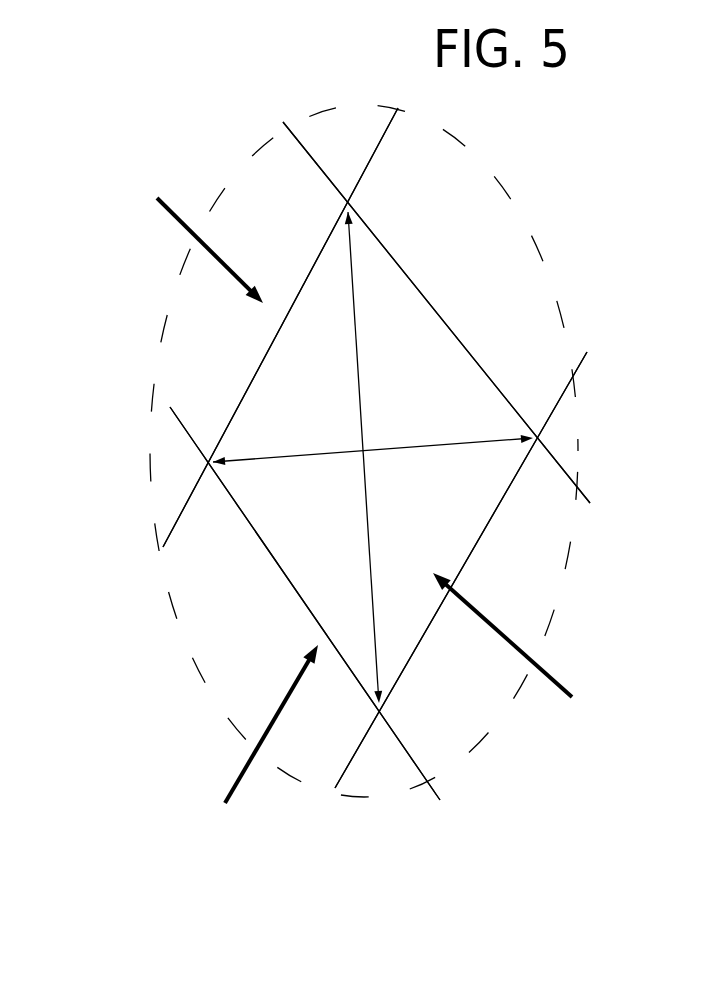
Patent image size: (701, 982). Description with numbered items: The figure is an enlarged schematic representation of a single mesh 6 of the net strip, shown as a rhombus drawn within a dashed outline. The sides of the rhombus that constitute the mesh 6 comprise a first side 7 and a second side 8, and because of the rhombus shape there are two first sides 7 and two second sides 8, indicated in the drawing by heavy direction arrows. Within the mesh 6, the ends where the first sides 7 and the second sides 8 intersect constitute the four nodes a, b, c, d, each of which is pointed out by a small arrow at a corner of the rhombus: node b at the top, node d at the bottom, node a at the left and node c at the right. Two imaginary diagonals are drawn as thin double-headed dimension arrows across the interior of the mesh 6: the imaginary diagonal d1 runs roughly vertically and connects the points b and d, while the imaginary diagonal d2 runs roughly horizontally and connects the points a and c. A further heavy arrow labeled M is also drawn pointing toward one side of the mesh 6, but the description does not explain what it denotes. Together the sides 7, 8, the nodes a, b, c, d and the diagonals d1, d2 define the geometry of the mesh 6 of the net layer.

The mesh 6 is at (549, 575).
The node b is at (347, 142).
The node a is at (179, 472).
The node c is at (565, 440).
The node d is at (382, 743).
The imaginary diagonal d1 is at (377, 553).
The imaginary diagonal d2 is at (373, 429).
The second side 8 is at (195, 221).
The first side 7 is at (260, 748).
The direction M is at (521, 651).